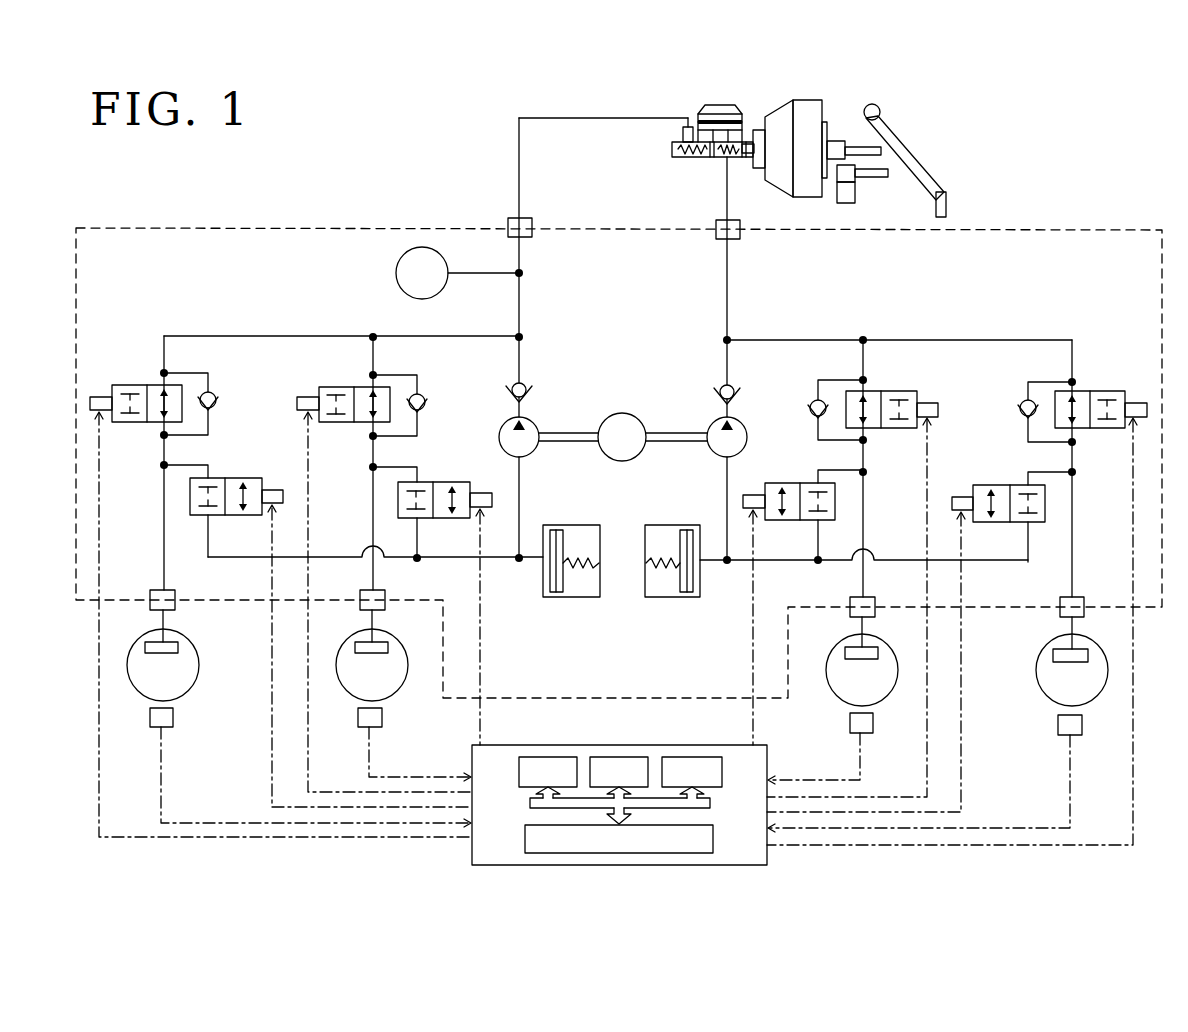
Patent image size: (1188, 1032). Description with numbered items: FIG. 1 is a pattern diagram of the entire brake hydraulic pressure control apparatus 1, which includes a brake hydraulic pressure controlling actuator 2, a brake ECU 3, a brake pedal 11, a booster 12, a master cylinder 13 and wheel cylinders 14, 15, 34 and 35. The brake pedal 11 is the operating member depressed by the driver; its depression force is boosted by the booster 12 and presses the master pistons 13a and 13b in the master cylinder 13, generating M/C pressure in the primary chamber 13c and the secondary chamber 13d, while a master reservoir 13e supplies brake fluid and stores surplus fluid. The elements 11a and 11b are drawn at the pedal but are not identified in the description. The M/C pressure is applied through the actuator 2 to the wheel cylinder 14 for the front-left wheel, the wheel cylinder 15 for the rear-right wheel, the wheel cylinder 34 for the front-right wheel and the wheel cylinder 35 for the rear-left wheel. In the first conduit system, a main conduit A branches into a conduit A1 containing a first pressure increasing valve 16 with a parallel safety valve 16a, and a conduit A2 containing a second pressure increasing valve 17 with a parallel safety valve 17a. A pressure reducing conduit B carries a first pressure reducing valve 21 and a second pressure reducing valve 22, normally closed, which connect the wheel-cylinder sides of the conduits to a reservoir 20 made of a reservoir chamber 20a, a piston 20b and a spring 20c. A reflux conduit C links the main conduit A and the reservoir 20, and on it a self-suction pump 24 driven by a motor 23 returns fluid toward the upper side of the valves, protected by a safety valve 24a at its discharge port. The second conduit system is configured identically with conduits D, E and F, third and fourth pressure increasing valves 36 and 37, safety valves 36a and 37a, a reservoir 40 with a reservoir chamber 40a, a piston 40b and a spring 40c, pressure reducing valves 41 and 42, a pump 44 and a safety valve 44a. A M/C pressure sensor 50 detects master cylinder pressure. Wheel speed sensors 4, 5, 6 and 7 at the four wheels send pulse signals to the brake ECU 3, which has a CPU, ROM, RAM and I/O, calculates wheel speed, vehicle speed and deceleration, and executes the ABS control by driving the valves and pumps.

The brake hydraulic pressure control apparatus 1 is at (1006, 95).
The brake hydraulic pressure controlling actuator 2 is at (1045, 231).
The brake ECU 3 is at (768, 860).
The wheel speed sensor 4 is at (175, 717).
The wheel speed sensor 5 is at (383, 717).
The wheel speed sensor 6 is at (1083, 725).
The wheel speed sensor 7 is at (874, 723).
The brake pedal 11 is at (887, 140).
The pedal stroke sensor 11a is at (856, 177).
The pedal force sensor 11b is at (843, 203).
The booster 12 is at (806, 100).
The master cylinder 13 is at (707, 147).
The master piston 13a is at (712, 158).
The master piston 13b is at (750, 160).
The primary chamber 13c is at (687, 158).
The secondary chamber 13d is at (737, 158).
The master reservoir 13e is at (720, 105).
The wheel cylinder 14 is at (145, 647).
The wheel cylinder 15 is at (355, 647).
The first pressure increasing valve 16 is at (157, 383).
The safety valve 16a is at (216, 393).
The second pressure increasing valve 17 is at (362, 385).
The safety valve 17a is at (427, 397).
The reservoir 20 is at (580, 520).
The reservoir chamber 20a is at (548, 586).
The piston 20b is at (558, 596).
The spring 20c is at (590, 571).
The first pressure reducing valve 21 is at (217, 477).
The second pressure reducing valve 22 is at (433, 480).
The motor 23 is at (612, 412).
The self-suction pump 24 is at (498, 437).
The safety valve 24a is at (523, 385).
The wheel cylinder 34 is at (1088, 655).
The wheel cylinder 35 is at (898, 645).
The third pressure increasing valve 36 is at (1082, 388).
The safety valve 36a is at (1019, 400).
The fourth pressure increasing valve 37 is at (876, 388).
The safety valve 37a is at (810, 402).
The reservoir 40 is at (672, 520).
The reservoir chamber 40a is at (695, 590).
The piston 40b is at (688, 595).
The spring 40c is at (657, 573).
The pressure reducing valve 41 is at (1020, 483).
The pressure reducing valve 42 is at (808, 482).
The pump 44 is at (748, 437).
The safety valve 44a is at (720, 392).
The M/C pressure sensor 50 is at (396, 273).
The conduit A is at (521, 306).
The conduit A1 is at (162, 525).
The conduit A2 is at (371, 512).
The conduit B is at (430, 561).
The conduit C is at (517, 353).
The conduit D is at (731, 268).
The conduit E is at (803, 563).
The conduit F is at (731, 355).